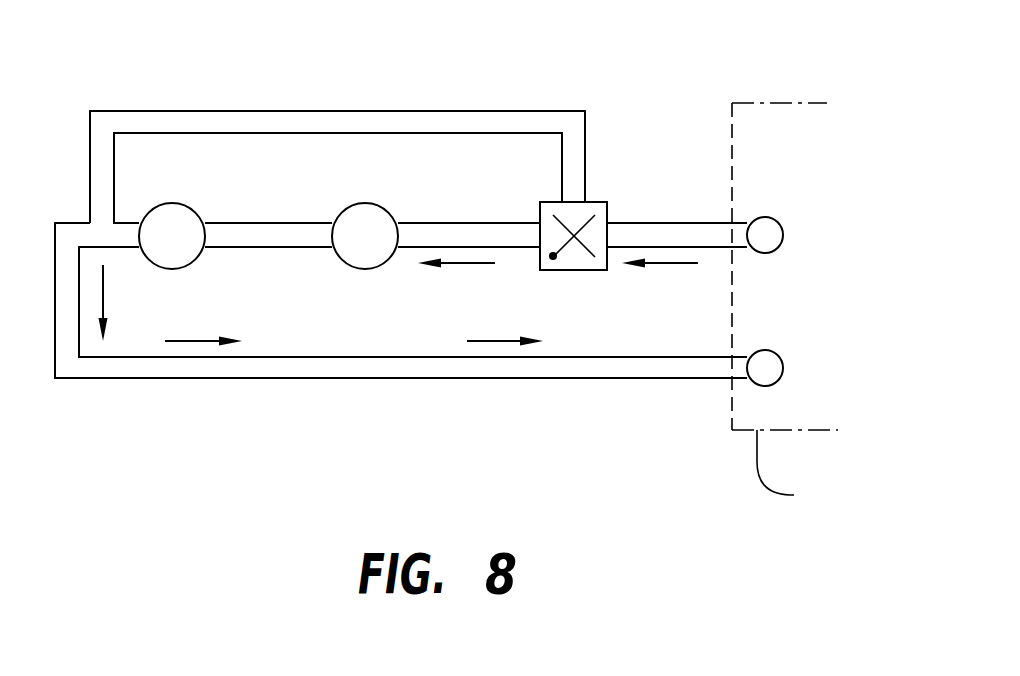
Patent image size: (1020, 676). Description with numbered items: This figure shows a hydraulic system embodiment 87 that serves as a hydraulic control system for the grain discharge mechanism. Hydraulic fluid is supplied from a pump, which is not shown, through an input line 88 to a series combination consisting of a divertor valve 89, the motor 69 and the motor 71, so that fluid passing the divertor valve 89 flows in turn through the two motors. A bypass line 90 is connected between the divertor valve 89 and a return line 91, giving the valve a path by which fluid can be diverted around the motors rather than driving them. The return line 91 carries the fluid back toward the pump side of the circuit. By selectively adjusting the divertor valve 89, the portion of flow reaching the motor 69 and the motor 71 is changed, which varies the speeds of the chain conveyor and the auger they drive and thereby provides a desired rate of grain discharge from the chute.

The hydraulic system embodiment 87 is at (645, 86).
The input line 88 is at (627, 222).
The divertor valve 89 is at (573, 270).
The bypass line 90 is at (230, 111).
The return line 91 is at (402, 378).
The motor 69 is at (177, 203).
The motor 71 is at (365, 203).